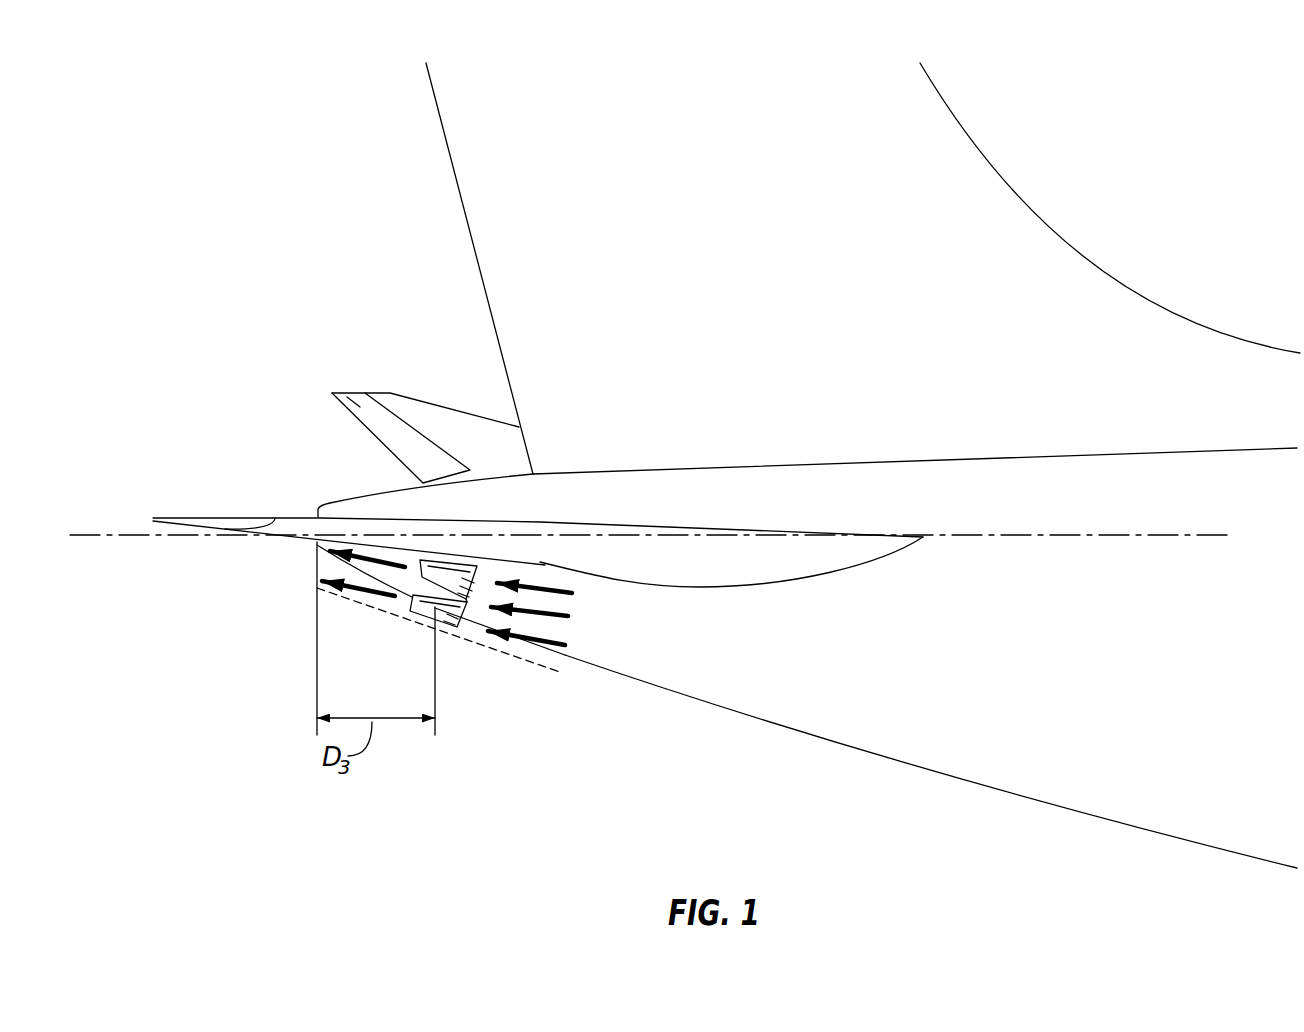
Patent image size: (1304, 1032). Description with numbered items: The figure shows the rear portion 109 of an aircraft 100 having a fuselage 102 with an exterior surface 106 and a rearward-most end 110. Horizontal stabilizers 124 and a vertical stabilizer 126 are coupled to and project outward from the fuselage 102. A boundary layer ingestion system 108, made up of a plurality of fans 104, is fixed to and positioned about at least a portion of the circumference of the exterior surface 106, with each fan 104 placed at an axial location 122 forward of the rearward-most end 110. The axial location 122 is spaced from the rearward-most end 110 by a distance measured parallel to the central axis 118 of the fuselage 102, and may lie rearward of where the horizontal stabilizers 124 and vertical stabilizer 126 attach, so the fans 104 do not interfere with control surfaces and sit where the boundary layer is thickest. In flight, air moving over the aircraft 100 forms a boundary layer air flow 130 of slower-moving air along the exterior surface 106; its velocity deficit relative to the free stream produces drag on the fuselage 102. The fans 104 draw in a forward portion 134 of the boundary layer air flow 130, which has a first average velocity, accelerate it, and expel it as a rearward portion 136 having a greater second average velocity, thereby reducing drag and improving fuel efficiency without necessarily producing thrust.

The aircraft 100 is at (1095, 72).
The fuselage 102 is at (1132, 445).
The fan 104 is at (427, 563).
The exterior surface 106 is at (907, 463).
The boundary layer ingestion system 108 is at (480, 591).
The rear portion 109 is at (766, 458).
The rearward-most end 110 is at (320, 542).
The central axis 118 is at (1030, 535).
The axial location 122 is at (475, 556).
The horizontal stabilizer 124 is at (332, 393).
The vertical stabilizer 126 is at (510, 188).
The boundary layer air flow 130 is at (473, 634).
The forward portion 134 is at (530, 642).
The rearward portion 136 is at (357, 590).